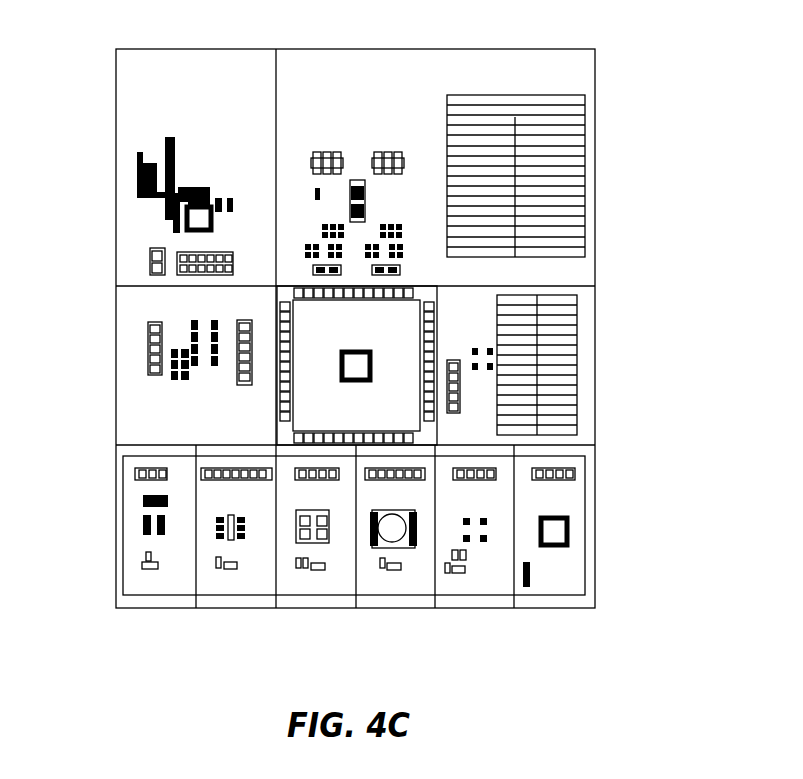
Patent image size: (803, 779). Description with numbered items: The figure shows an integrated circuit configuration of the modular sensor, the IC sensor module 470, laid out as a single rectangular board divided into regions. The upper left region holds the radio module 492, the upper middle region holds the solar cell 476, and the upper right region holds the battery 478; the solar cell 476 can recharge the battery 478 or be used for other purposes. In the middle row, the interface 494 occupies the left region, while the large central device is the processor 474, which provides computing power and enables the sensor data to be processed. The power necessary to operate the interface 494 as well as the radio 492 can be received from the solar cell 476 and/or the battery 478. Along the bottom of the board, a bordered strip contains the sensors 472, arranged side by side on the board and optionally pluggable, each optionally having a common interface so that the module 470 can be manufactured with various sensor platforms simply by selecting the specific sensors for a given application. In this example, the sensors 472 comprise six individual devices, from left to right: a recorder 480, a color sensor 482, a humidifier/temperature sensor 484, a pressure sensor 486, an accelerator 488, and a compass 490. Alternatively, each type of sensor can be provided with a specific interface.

The IC sensor module 470 is at (598, 490).
The sensors 472 is at (588, 571).
The processor 474 is at (374, 337).
The solar cell 476 is at (327, 150).
The battery 478 is at (439, 127).
The recorder 480 is at (160, 583).
The color sensor 482 is at (234, 583).
The humidifier/temperature sensor 484 is at (317, 583).
The pressure sensor 486 is at (397, 583).
The accelerator 488 is at (477, 585).
The compass 490 is at (560, 585).
The radio module 492 is at (185, 138).
The interface 494 is at (135, 393).